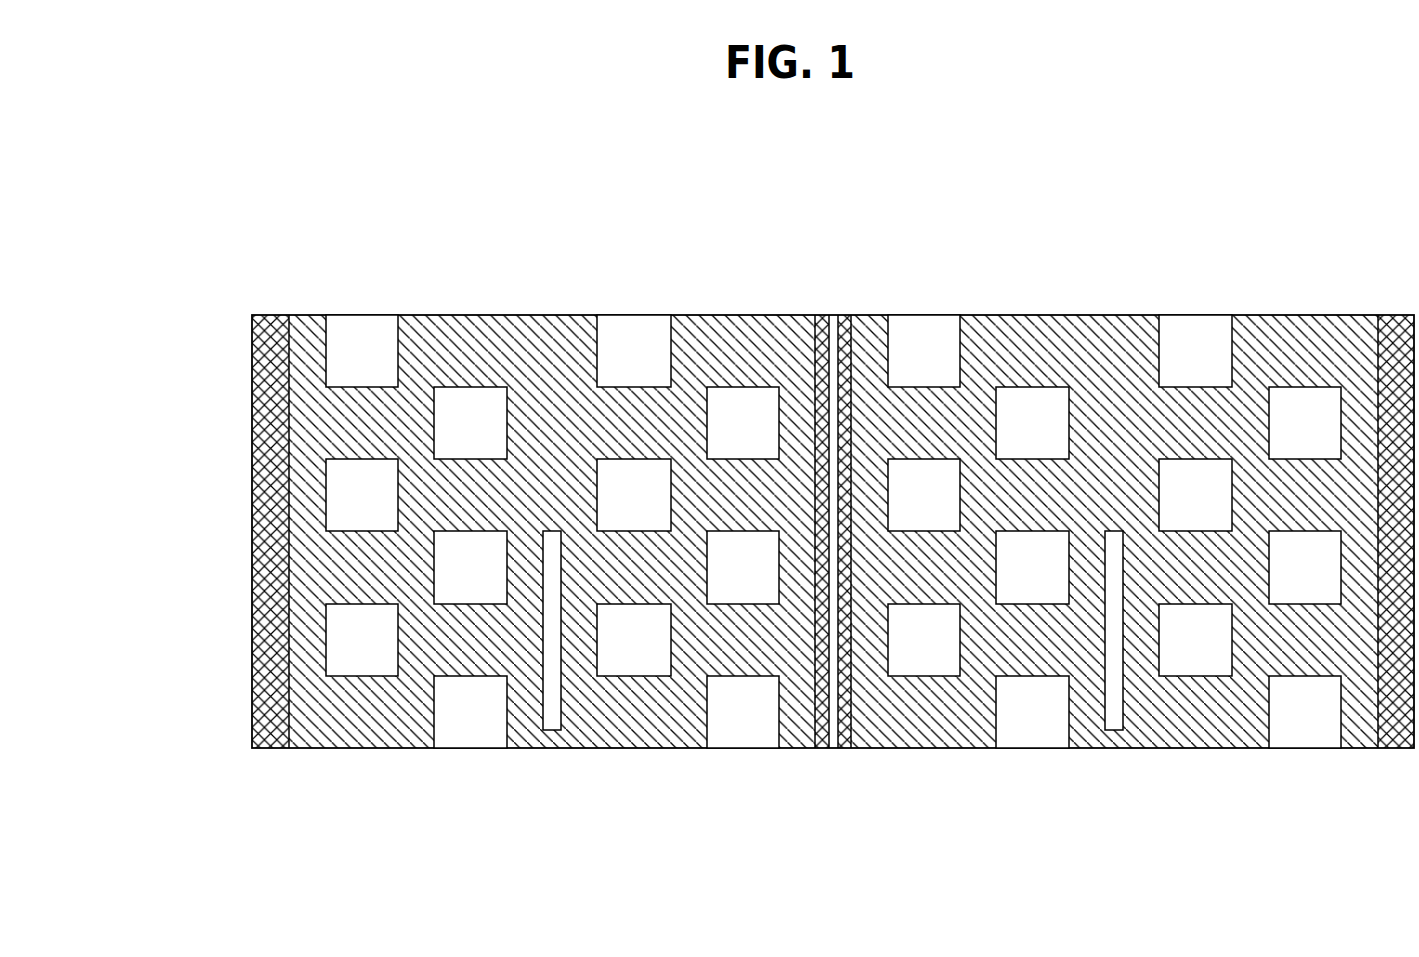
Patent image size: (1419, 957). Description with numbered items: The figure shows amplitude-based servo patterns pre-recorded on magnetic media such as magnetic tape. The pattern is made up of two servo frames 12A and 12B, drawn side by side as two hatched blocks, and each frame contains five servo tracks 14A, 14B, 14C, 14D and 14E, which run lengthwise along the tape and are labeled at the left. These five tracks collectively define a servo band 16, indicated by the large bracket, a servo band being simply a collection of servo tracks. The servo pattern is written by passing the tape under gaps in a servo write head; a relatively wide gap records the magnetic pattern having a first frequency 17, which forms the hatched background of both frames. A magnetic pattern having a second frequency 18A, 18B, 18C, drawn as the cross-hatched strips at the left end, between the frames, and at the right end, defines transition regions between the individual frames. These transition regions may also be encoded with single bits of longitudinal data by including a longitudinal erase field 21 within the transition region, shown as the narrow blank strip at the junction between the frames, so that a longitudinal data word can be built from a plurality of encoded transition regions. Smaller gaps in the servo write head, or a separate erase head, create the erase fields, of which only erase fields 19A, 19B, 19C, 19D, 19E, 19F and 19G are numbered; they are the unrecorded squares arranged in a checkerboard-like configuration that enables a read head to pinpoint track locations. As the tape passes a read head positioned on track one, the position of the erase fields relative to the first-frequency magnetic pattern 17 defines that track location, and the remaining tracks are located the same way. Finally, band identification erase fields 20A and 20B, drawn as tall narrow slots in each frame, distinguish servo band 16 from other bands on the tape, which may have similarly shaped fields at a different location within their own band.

The servo frame 12A is at (534, 497).
The servo frame 12B is at (1100, 506).
The servo track 14A is at (233, 387).
The servo track 14B is at (233, 459).
The servo track 14C is at (233, 531).
The servo track 14D is at (233, 604).
The servo track 14E is at (233, 676).
The servo band 16 is at (157, 315).
The magnetic pattern having a first frequency 17 is at (960, 710).
The magnetic pattern having a second frequency 18A is at (272, 731).
The magnetic pattern having a second frequency 18B is at (842, 316).
The magnetic pattern having a second frequency 18C is at (1395, 733).
The erase field 19A is at (362, 350).
The erase field 19B is at (469, 413).
The erase field 19C is at (614, 350).
The erase field 19D is at (725, 422).
The erase field 19E is at (743, 712).
The erase field 19F is at (1195, 640).
The erase field 19G is at (1303, 712).
The band identification erase field 20A is at (551, 710).
The band identification erase field 20B is at (1113, 710).
The longitudinal erase field 21 is at (833, 340).